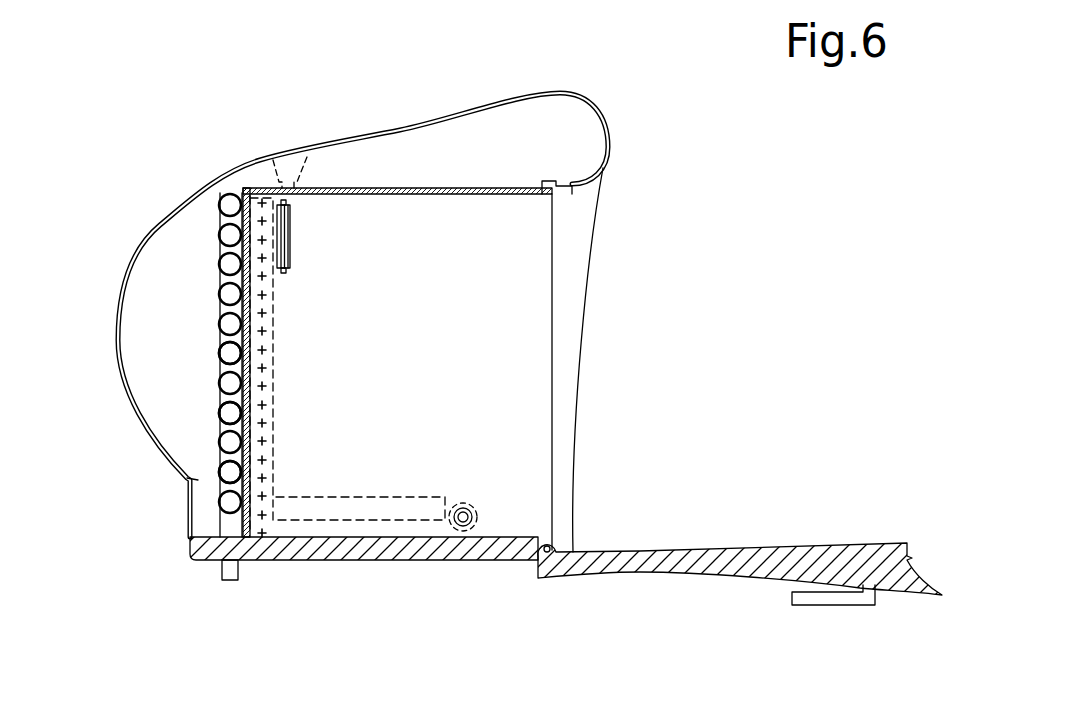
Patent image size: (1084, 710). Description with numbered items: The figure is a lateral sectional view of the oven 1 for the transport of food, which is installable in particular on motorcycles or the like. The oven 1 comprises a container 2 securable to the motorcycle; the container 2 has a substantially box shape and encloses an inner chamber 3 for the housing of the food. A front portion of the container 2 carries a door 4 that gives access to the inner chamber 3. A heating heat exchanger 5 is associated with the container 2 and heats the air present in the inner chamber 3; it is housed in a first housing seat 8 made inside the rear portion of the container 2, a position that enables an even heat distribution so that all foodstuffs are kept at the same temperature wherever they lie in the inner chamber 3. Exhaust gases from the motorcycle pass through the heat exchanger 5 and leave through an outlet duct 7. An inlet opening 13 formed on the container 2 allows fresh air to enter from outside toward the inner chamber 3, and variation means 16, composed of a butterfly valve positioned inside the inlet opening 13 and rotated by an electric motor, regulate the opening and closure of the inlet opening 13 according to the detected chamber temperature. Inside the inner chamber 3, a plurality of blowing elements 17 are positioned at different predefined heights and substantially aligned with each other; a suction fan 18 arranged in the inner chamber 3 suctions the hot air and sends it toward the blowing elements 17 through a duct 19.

The oven 1 is at (117, 68).
The container 2 is at (110, 275).
The inner chamber 3 is at (424, 361).
The door 4 is at (772, 550).
The heating heat exchanger 5 is at (228, 234).
The outlet duct 7 is at (230, 572).
The first housing seat 8 is at (183, 480).
The inlet opening 13 is at (293, 237).
The variation means 16 is at (283, 222).
The blowing elements 17 is at (230, 472).
The suction fan 18 is at (477, 519).
The duct 19 is at (397, 520).